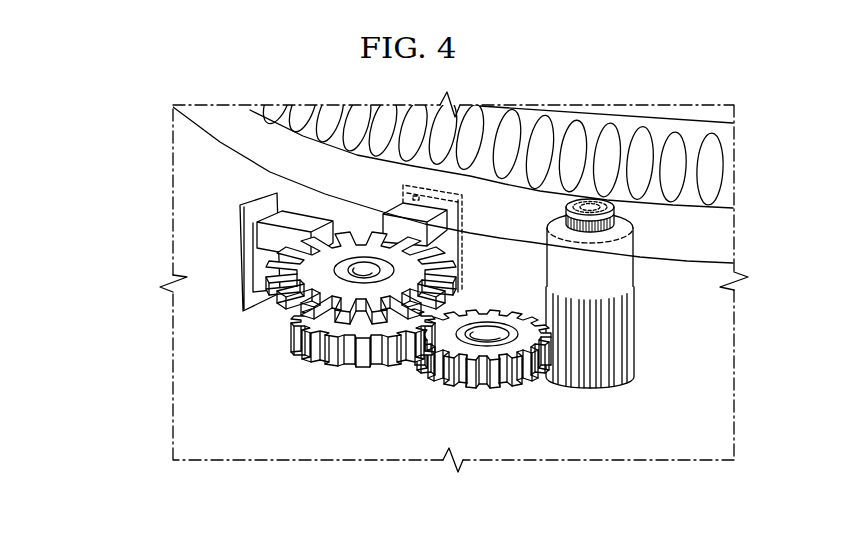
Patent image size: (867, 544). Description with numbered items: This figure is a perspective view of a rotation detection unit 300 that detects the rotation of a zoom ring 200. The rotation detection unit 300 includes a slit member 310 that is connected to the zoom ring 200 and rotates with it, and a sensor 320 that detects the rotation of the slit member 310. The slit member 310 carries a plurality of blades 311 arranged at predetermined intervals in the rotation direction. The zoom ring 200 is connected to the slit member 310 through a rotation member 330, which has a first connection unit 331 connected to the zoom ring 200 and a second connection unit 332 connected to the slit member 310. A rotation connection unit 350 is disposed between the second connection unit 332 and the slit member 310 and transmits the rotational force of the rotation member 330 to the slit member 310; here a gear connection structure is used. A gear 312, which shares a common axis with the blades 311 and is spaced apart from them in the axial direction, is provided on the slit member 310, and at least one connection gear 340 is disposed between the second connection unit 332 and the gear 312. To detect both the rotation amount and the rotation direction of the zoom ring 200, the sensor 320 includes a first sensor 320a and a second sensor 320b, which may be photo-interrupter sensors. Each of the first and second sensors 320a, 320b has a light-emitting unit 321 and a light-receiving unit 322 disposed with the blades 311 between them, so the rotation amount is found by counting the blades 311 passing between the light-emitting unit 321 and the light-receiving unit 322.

The zoom ring 200 is at (718, 224).
The rotation detection unit 300 is at (403, 353).
The slit member 310 is at (317, 303).
The blades 311 is at (360, 305).
The gear 312 is at (363, 416).
The sensor 320 is at (245, 247).
The first sensor 320a is at (203, 261).
The second sensor 320b is at (383, 212).
The light-emitting unit 321 is at (300, 222).
The light-receiving unit 322 is at (285, 300).
The rotation member 330 is at (662, 293).
The first connection unit 331 is at (623, 270).
The second connection unit 332 is at (620, 345).
The connection gear 340 is at (470, 390).
The rotation connection unit 350 is at (421, 426).